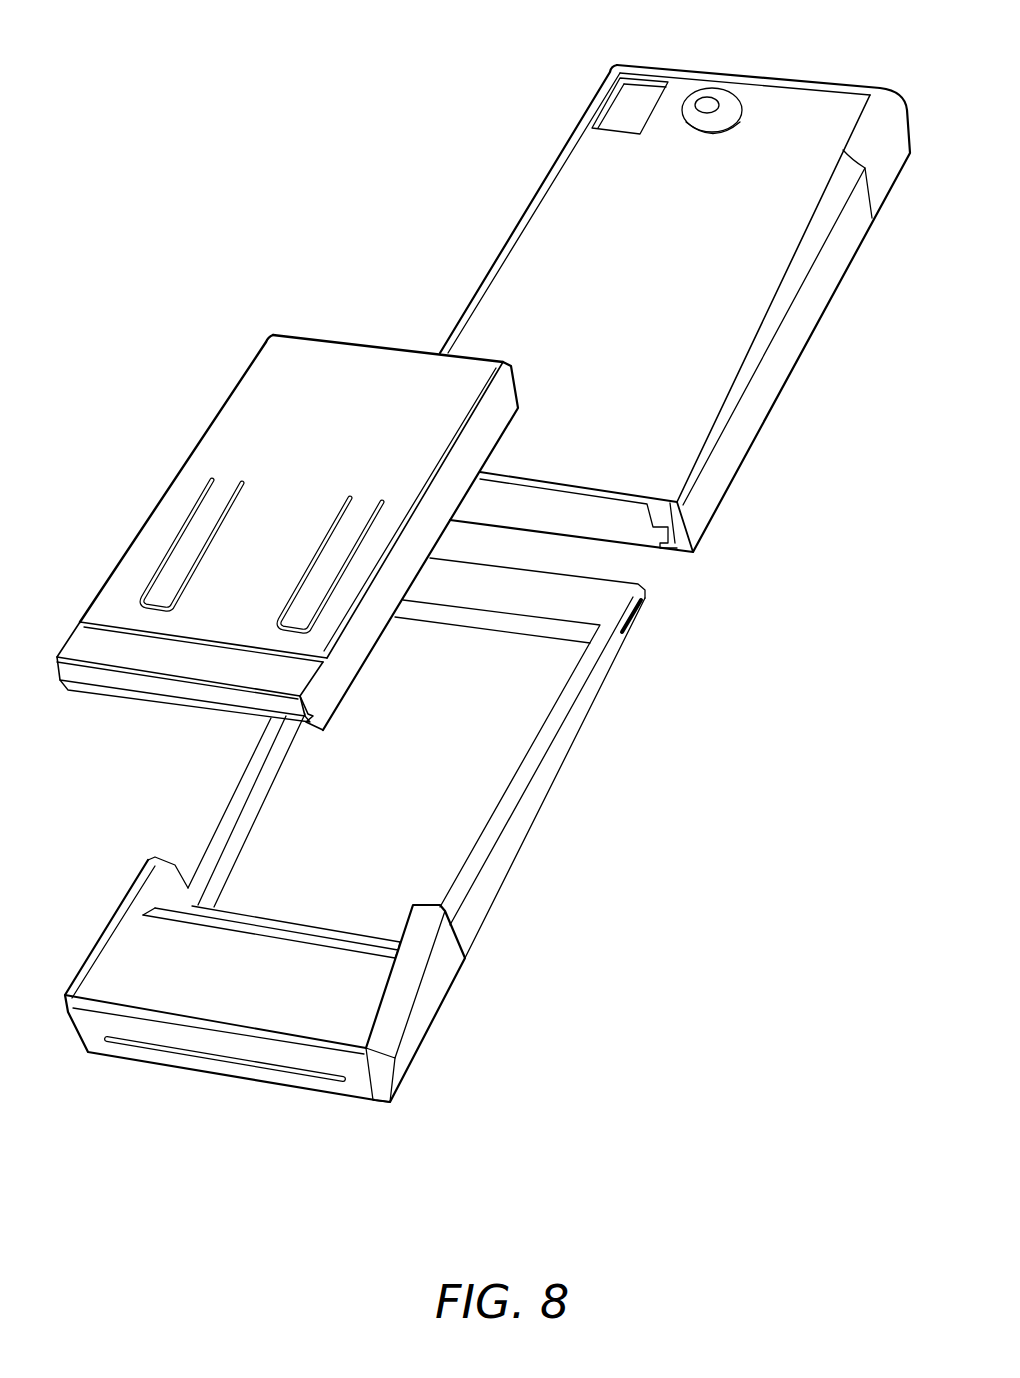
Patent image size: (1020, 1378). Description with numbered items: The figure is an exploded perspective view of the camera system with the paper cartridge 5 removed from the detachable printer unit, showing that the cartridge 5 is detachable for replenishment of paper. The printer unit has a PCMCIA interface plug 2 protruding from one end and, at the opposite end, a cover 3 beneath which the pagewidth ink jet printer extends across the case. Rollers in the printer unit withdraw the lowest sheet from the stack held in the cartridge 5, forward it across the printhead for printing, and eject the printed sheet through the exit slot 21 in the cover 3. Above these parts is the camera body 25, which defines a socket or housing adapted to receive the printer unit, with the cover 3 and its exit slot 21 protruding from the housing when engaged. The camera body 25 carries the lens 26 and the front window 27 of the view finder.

The PCMCIA interface plug 2 is at (613, 597).
The cover 3 is at (420, 1008).
The sheet paper cartridge 5 is at (252, 423).
The exit slot 21 is at (278, 1070).
The camera body 25 is at (785, 335).
The lens 26 is at (707, 97).
The front window 27 is at (623, 113).